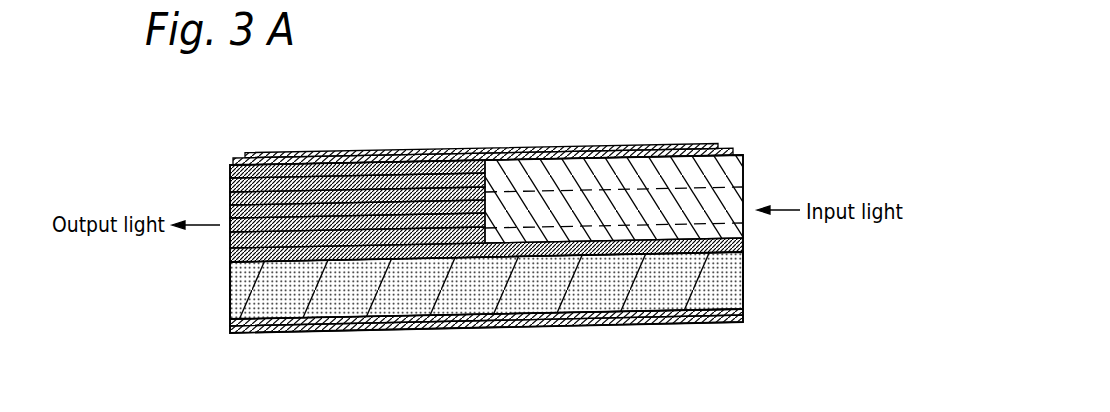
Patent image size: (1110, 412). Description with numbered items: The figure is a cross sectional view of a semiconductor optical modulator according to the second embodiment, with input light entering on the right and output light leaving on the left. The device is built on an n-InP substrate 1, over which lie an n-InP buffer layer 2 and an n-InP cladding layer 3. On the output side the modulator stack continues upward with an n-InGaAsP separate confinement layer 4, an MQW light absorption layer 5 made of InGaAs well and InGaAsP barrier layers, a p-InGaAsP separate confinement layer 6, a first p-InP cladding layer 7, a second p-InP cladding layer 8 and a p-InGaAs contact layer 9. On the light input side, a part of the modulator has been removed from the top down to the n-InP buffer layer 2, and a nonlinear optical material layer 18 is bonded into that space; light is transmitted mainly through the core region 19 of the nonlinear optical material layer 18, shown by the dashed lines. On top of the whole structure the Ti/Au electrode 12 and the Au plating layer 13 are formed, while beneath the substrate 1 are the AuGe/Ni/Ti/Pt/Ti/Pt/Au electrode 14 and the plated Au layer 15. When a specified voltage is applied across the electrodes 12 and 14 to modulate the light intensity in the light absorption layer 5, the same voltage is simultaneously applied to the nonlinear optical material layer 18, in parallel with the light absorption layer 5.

The n-InP substrate 1 is at (746, 282).
The n-InP buffer layer 2 is at (514, 257).
The n-InP cladding layer 3 is at (469, 244).
The n-InGaAsP separate confinement layer 4 is at (454, 222).
The MQW light absorption layer 5 is at (426, 212).
The p-InGaAsP separate confinement layer 6 is at (398, 202).
The first p-InP cladding layer 7 is at (372, 192).
The second p-InP cladding layer 8 is at (345, 182).
The p-InGaAs contact layer 9 is at (318, 172).
The Cr/Au electrode 12 is at (690, 153).
The Au plating layer 13 is at (656, 149).
The AuGe/Ni/Ti/Pt/Ti/Pt/Au electrode 14 is at (688, 327).
The plated Au layer 15 is at (655, 327).
The nonlinear optical material layer 18 is at (746, 197).
The core region of the nonlinear optical material layer 19 is at (609, 192).